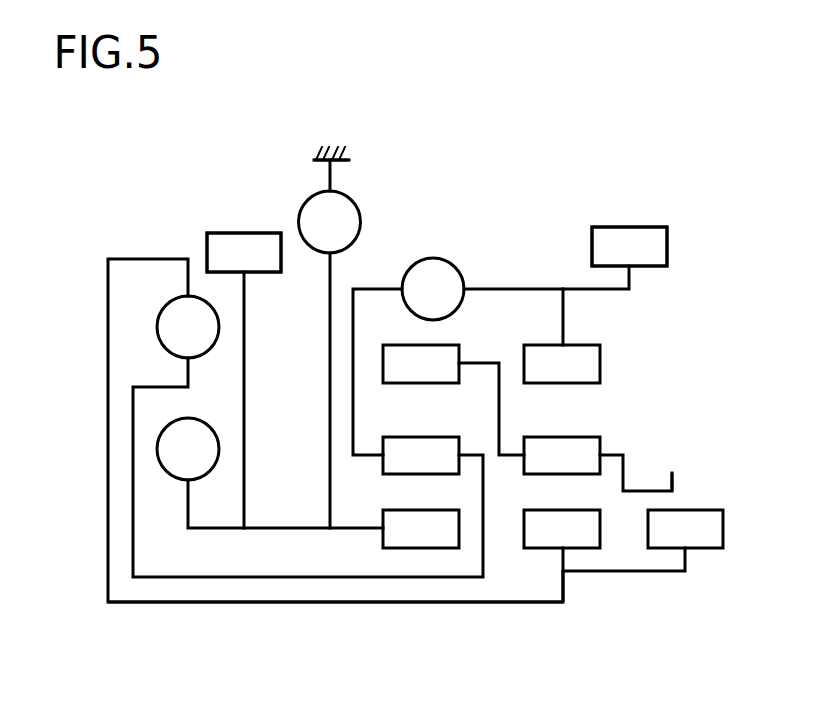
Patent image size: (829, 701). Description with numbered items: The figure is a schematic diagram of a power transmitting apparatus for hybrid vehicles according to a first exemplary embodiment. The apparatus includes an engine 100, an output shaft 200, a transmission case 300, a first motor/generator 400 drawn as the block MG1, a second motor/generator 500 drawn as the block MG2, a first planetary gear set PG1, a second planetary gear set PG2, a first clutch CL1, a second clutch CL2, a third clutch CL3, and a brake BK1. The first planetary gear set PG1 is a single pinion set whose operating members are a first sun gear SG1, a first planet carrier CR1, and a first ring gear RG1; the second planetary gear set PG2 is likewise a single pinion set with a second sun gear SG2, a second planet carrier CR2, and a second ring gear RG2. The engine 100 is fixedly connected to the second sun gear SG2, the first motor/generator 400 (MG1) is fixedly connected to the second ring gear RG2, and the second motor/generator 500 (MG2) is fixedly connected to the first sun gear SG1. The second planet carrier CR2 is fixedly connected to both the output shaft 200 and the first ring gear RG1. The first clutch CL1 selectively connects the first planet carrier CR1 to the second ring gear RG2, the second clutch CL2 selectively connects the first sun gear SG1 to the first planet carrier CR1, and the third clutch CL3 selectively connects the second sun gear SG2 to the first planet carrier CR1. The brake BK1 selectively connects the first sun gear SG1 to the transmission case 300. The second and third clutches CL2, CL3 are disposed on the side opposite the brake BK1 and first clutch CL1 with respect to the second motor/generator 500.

The engine 100 is at (707, 529).
The output shaft 200 is at (679, 471).
The transmission case 300 is at (331, 136).
The first motor/generator 400 is at (629, 225).
The second motor/generator 500 is at (244, 232).
The first planetary gear set PG1 is at (335, 635).
The second planetary gear set PG2 is at (582, 612).
The brake BK1 is at (330, 222).
The first clutch CL1 is at (433, 289).
The second clutch CL2 is at (188, 449).
The third clutch CL3 is at (188, 327).
The first motor/generator MG1 is at (629, 246).
The second motor/generator MG2 is at (244, 252).
The first ring gear RG1 is at (421, 364).
The second ring gear RG2 is at (562, 364).
The first planet carrier CR1 is at (421, 455).
The second planet carrier CR2 is at (562, 455).
The first sun gear SG1 is at (421, 529).
The second sun gear SG2 is at (562, 529).